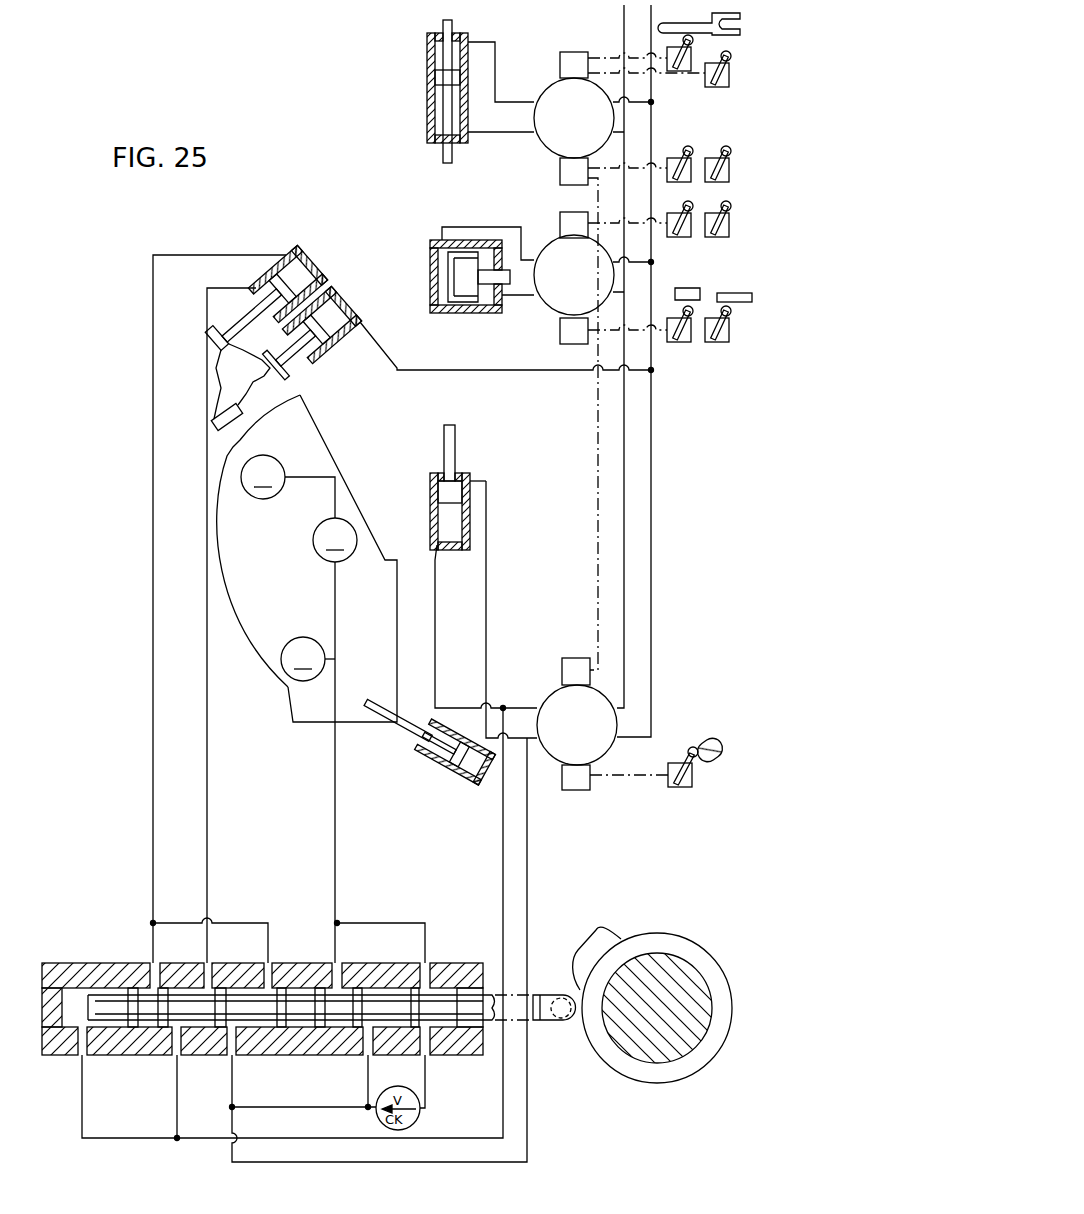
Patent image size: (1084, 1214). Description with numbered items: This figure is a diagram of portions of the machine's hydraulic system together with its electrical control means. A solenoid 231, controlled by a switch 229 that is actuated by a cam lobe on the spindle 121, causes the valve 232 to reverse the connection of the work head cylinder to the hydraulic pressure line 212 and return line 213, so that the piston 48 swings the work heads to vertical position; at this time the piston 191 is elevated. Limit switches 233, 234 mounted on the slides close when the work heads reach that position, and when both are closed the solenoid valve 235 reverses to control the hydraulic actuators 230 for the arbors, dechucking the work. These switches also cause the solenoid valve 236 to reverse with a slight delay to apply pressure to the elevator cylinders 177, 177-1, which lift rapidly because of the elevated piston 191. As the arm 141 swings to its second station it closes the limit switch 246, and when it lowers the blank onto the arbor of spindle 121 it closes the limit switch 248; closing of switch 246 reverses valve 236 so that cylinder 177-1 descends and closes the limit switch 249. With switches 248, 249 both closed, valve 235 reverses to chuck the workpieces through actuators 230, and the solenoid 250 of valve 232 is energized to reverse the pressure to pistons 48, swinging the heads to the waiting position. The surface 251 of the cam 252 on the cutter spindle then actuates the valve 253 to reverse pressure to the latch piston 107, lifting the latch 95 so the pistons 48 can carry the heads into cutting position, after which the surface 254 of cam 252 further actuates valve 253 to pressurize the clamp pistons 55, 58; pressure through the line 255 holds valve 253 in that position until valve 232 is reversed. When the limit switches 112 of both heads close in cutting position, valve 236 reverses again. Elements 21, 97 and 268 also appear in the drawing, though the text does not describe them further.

The shaft 21 is at (667, 993).
The piston 48 is at (455, 775).
The clamp piston 55 is at (335, 540).
The clamp piston 58 is at (283, 568).
The latch 95 is at (222, 413).
The cylinder 97 is at (340, 300).
The latch piston 107 is at (305, 250).
The limit switch 112 is at (698, 190).
The spindle 121 is at (727, 745).
The arm 141 is at (663, 27).
The elevator cylinder 177 is at (427, 45).
The elevator cylinder 177-1 is at (702, 292).
The piston 191 is at (437, 494).
The hydraulic pressure line 212 is at (651, 470).
The hydraulic return line 213 is at (624, 468).
The switch 229 is at (675, 788).
The hydraulic actuator 230 is at (432, 250).
The solenoid 231 is at (578, 782).
The valve 232 is at (553, 697).
The limit switch 233 is at (683, 237).
The limit switch 234 is at (716, 237).
The solenoid valve 235 is at (550, 320).
The solenoid valve 236 is at (548, 143).
The limit switch 246 is at (683, 71).
The limit switch 248 is at (748, 357).
The limit switch 249 is at (680, 343).
The solenoid 250 is at (578, 660).
The surface 251 is at (573, 990).
The cam 252 is at (653, 935).
The valve 253 is at (112, 1003).
The surface 254 is at (577, 955).
The line 255 is at (376, 923).
The switch 268 is at (727, 88).